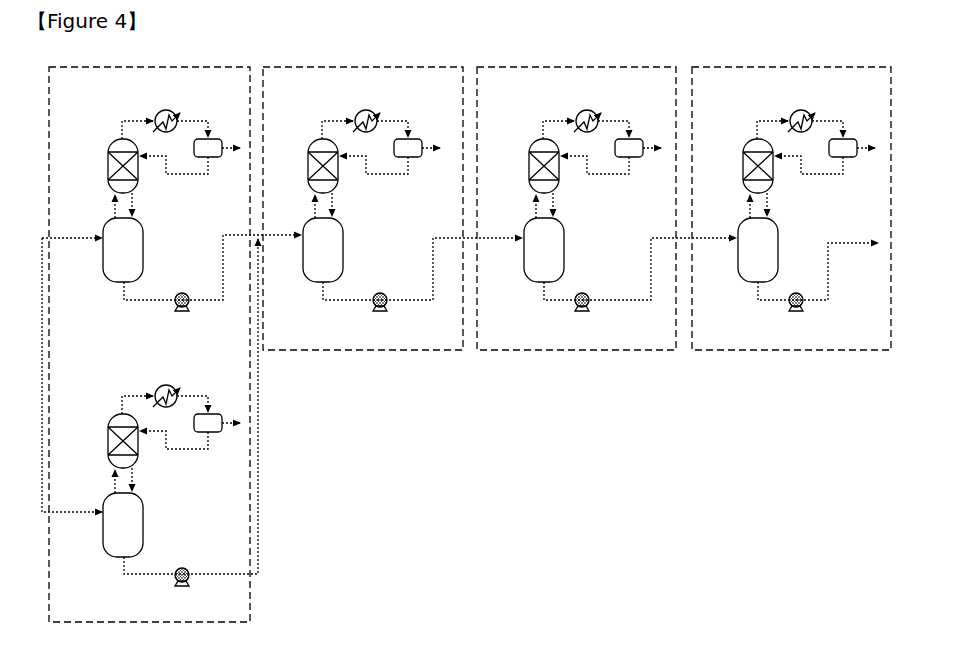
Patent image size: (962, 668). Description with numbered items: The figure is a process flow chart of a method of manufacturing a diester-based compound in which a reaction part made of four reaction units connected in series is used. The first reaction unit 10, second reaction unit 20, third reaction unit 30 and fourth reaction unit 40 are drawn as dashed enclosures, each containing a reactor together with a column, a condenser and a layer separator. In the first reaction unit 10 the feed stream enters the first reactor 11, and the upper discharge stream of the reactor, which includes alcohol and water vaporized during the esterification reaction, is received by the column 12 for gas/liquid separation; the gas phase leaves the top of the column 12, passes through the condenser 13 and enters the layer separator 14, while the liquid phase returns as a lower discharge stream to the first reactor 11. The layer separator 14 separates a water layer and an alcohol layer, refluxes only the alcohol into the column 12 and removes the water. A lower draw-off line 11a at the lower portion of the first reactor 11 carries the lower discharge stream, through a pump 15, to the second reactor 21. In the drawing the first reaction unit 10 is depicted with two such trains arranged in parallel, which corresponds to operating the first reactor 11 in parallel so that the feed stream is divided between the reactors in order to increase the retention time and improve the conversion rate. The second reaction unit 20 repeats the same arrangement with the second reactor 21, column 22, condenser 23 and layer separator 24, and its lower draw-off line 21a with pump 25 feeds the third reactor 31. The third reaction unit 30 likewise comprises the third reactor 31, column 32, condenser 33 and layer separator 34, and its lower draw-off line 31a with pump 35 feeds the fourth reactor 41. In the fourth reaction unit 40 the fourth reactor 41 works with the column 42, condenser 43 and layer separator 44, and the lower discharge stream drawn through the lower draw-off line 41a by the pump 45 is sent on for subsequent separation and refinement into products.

The first reaction unit 10 is at (75, 642).
The first reactor 11 is at (123, 387).
The lower draw-off line 11a is at (123, 285).
The column 12 is at (107, 157).
The condenser 13 is at (153, 111).
The layer separator 14 is at (213, 137).
The pump 15 is at (189, 310).
The second reaction unit 20 is at (290, 371).
The second reactor 21 is at (323, 250).
The lower draw-off line 21a is at (322, 285).
The column 22 is at (307, 161).
The condenser 23 is at (355, 111).
The layer separator 24 is at (413, 137).
The pump 25 is at (387, 310).
The third reaction unit 30 is at (504, 371).
The third reactor 31 is at (544, 250).
The lower draw-off line 31a is at (543, 285).
The column 32 is at (528, 161).
The condenser 33 is at (575, 111).
The layer separator 34 is at (634, 137).
The pump 35 is at (589, 310).
The fourth reaction unit 40 is at (717, 371).
The fourth reactor 41 is at (758, 250).
The lower draw-off line 41a is at (757, 285).
The column 42 is at (742, 161).
The condenser 43 is at (789, 111).
The layer separator 44 is at (848, 137).
The pump 45 is at (803, 310).